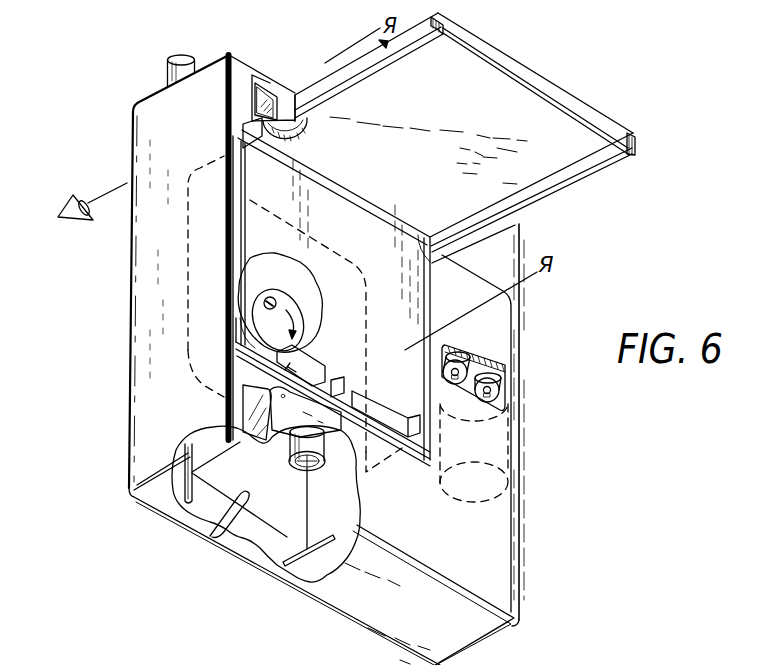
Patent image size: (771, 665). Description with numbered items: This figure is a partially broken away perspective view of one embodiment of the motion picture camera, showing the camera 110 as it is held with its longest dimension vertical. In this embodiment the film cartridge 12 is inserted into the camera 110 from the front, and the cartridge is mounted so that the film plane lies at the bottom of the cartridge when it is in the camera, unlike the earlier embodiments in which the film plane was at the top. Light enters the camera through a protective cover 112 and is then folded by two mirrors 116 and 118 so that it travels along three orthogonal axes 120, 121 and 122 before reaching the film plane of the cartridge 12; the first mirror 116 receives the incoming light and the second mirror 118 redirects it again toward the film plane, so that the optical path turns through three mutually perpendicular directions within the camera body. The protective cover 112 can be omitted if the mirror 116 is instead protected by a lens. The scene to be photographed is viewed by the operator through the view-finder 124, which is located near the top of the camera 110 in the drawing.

The camera 110 is at (117, 311).
The film cartridge 12 is at (361, 228).
The view-finder 124 is at (285, 88).
The protective cover 112 is at (243, 410).
The orthogonal axis 120 is at (377, 370).
The mirror 116 is at (168, 513).
The mirror 118 is at (294, 590).
The orthogonal axis 121 is at (210, 536).
The orthogonal axis 122 is at (299, 472).